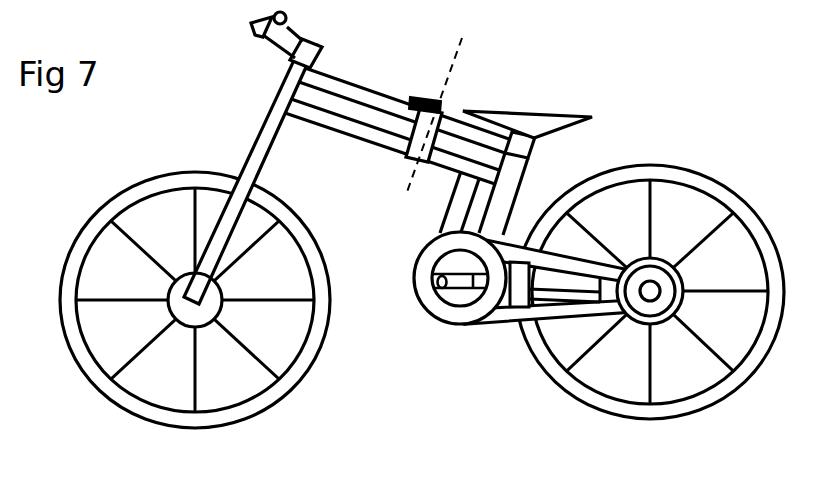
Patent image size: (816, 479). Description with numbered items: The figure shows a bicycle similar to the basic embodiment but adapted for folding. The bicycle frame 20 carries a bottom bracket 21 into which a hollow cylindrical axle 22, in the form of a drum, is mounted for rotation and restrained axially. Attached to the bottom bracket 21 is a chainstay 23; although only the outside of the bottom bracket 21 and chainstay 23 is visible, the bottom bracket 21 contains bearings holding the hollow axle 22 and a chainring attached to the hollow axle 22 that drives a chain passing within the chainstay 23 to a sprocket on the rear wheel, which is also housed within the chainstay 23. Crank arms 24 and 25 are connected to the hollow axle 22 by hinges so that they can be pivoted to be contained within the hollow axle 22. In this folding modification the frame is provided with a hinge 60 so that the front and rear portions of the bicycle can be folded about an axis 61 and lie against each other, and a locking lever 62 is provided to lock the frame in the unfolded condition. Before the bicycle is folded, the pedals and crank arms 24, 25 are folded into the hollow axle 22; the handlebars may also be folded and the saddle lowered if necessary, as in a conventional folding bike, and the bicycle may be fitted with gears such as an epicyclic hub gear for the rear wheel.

The bicycle frame 20 is at (452, 198).
The bottom bracket 21 is at (423, 263).
The hollow cylindrical axle 22 is at (438, 318).
The chainstay 23 is at (563, 310).
The crank arm 24 is at (438, 290).
The crank arm 25 is at (477, 291).
The hinge 60 is at (410, 145).
The axis 61 is at (458, 62).
The locking lever 62 is at (418, 97).